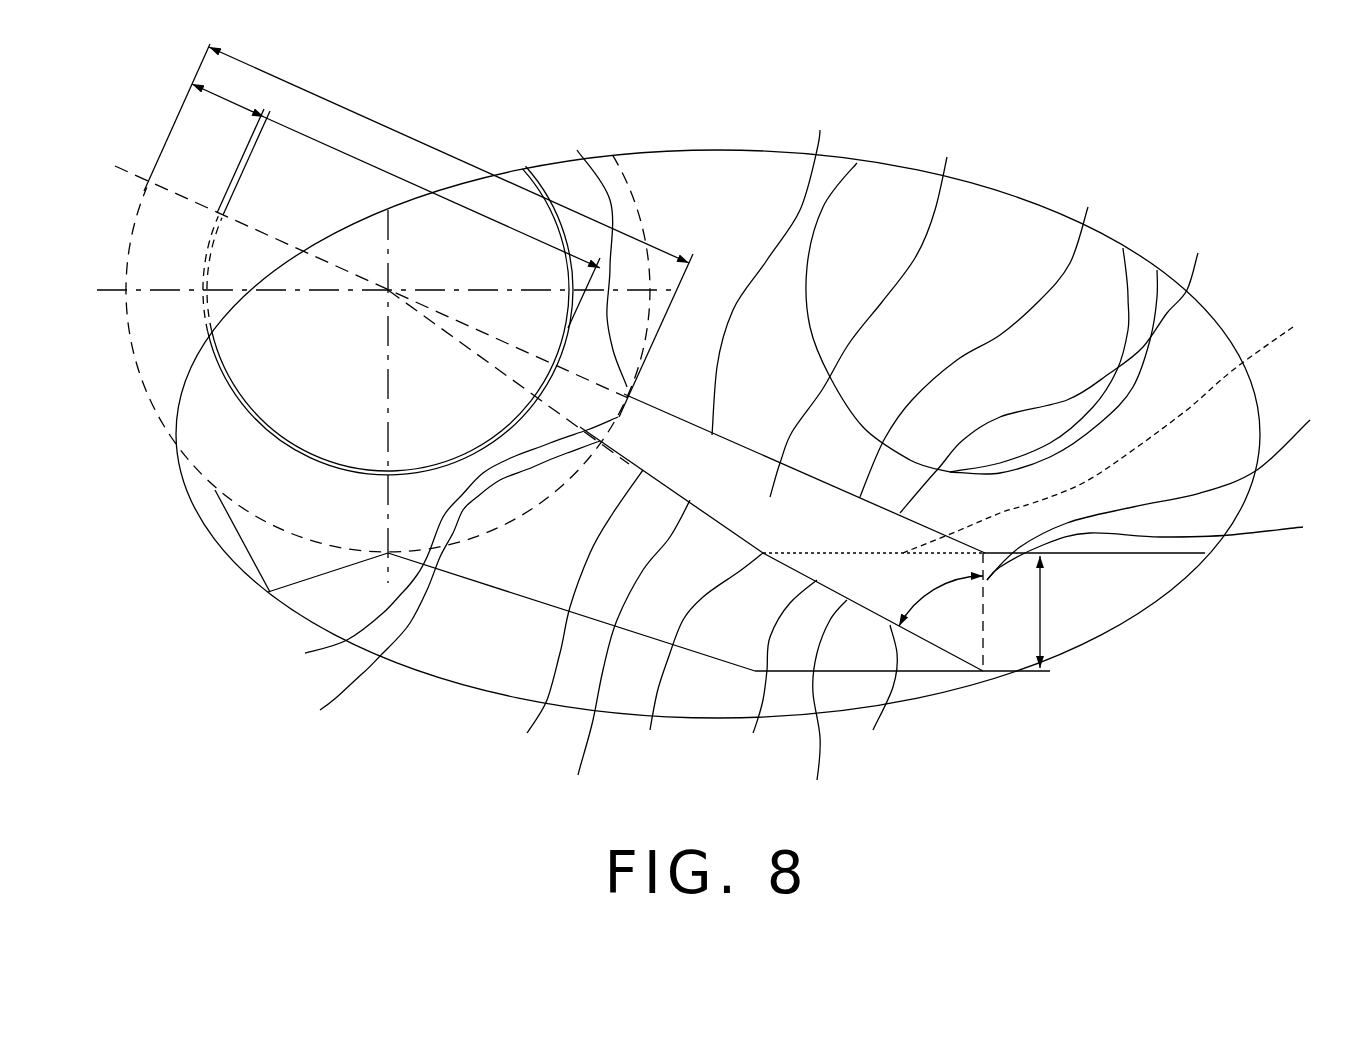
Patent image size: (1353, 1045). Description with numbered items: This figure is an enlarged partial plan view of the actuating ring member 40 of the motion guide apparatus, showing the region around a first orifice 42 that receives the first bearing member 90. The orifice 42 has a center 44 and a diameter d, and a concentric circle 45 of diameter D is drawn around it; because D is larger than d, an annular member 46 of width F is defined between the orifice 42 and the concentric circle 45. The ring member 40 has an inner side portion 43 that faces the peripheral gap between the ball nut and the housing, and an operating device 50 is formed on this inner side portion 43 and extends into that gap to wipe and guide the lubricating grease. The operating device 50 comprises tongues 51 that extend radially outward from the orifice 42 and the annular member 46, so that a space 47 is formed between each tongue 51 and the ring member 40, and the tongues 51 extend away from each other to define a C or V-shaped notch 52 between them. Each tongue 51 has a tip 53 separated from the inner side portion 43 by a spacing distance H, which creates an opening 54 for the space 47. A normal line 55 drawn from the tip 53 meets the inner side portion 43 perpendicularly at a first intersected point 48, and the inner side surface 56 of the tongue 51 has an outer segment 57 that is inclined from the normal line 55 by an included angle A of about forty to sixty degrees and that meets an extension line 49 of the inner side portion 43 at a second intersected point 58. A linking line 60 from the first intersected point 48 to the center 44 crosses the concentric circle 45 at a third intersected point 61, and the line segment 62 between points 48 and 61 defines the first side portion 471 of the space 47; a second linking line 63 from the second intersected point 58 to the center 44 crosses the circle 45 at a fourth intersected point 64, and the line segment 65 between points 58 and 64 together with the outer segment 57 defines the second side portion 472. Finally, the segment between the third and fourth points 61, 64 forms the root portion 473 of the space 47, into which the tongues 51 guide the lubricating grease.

The actuating ring member 40 is at (722, 185).
The first orifice 42 is at (290, 370).
The inner side portion 43 is at (1170, 555).
The center 44 is at (388, 290).
The concentric circle 45 is at (215, 490).
The annular member 46 is at (233, 453).
The space 47 is at (874, 306).
The first side portion 471 is at (981, 330).
The second side portion 472 is at (818, 711).
The root portion 473 is at (428, 553).
The first intersected point 48 is at (1170, 483).
The extension line 49 is at (1121, 423).
The operating device 50 is at (493, 573).
The tongue 51 is at (265, 553).
The notch 52 is at (338, 602).
The tip 53 is at (983, 671).
The opening 54 is at (990, 633).
The normal line 55 is at (1167, 540).
The inner side surface 56 is at (769, 676).
The outer segment 57 is at (869, 697).
The second intersected point 58 is at (688, 662).
The linking line 60 is at (780, 262).
The third intersected point 61 is at (583, 247).
The line segment 62 is at (1064, 364).
The second linking line 63 is at (564, 623).
The fourth intersected point 64 is at (434, 595).
The line segment 65 is at (619, 661).
The bearing member 90 is at (227, 370).
The diameter of concentric circle D is at (416, 153).
The diameter of first orifice d is at (432, 192).
The width of annular member F is at (228, 95).
The included angle A is at (941, 591).
The spacing distance H is at (1056, 612).